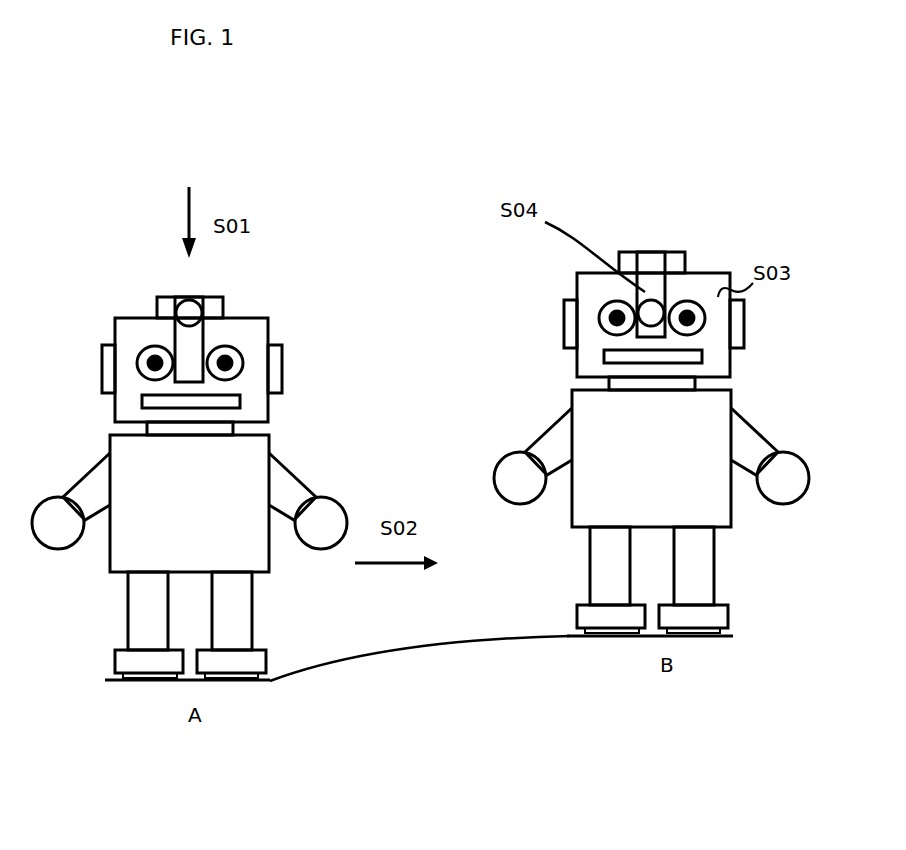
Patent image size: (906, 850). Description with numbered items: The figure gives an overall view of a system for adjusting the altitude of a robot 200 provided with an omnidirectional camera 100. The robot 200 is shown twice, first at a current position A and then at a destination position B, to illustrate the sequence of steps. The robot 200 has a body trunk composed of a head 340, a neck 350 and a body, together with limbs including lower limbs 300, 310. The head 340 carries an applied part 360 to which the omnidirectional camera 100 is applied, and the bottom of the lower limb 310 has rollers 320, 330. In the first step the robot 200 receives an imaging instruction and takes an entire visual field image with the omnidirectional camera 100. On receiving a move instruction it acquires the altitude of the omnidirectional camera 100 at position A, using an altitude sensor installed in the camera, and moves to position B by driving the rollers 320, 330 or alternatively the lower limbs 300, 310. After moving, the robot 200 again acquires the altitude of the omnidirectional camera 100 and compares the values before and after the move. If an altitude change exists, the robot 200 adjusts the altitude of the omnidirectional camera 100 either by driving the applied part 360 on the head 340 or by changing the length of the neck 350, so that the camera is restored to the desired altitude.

The omnidirectional camera 100 is at (192, 313).
The robot 200 is at (262, 445).
The lower limb 300 is at (237, 620).
The lower limb 310 is at (137, 620).
The roller 320 is at (252, 682).
The roller 330 is at (128, 680).
The head 340 is at (257, 408).
The neck 350 is at (160, 432).
The applied part 360 is at (188, 342).